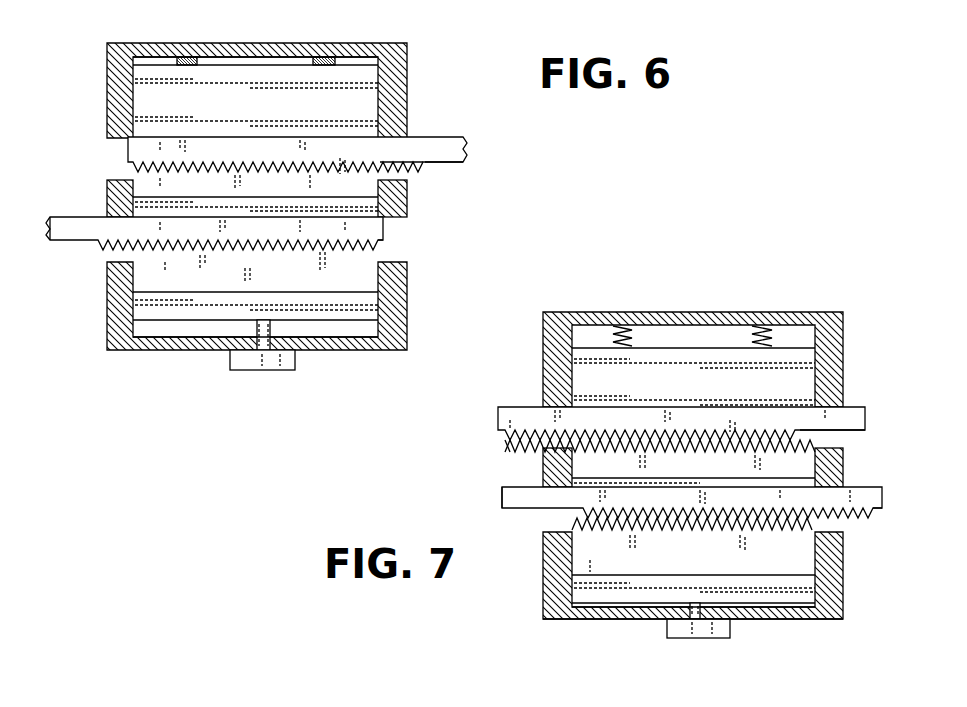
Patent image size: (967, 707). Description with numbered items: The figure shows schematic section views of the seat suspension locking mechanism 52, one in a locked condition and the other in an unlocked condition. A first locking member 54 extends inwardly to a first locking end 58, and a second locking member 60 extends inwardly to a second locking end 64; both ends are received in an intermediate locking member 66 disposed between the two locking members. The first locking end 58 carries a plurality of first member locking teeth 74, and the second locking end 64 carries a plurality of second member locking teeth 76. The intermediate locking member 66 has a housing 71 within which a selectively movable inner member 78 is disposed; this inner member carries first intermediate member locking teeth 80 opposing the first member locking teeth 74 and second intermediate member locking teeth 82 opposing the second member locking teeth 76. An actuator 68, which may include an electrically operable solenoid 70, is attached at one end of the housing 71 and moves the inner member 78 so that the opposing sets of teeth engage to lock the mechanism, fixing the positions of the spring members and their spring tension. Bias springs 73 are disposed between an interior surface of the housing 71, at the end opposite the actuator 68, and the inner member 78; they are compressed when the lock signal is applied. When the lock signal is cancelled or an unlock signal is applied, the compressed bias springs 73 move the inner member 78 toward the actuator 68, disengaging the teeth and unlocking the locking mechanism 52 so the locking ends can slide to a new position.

In FIG. 6, the locking mechanism 52 is at (104, 76).
In FIG. 7, the locking mechanism 52 is at (540, 353).
In FIG. 6, the first locking member 54 is at (62, 243).
In FIG. 7, the first locking member 54 is at (512, 511).
In FIG. 6, the first locking end 58 is at (356, 233).
In FIG. 7, the first locking end 58 is at (882, 500).
In FIG. 6, the second locking member 60 is at (451, 170).
In FIG. 7, the second locking member 60 is at (857, 406).
In FIG. 6, the second locking end 64 is at (127, 152).
In FIG. 7, the second locking end 64 is at (497, 420).
In FIG. 6, the intermediate locking member 66 is at (395, 353).
In FIG. 7, the intermediate locking member 66 is at (828, 621).
In FIG. 6, the actuator 68 is at (257, 372).
In FIG. 7, the actuator 68 is at (712, 641).
In FIG. 6, the electrically operable solenoid 70 is at (232, 358).
In FIG. 7, the electrically operable solenoid 70 is at (684, 636).
In FIG. 6, the housing 71 is at (185, 56).
In FIG. 7, the housing 71 is at (588, 621).
In FIG. 6, the bias springs 73 is at (318, 60).
In FIG. 7, the bias springs 73 is at (757, 340).
In FIG. 6, the first member locking teeth 74 is at (101, 244).
In FIG. 7, the first member locking teeth 74 is at (845, 513).
In FIG. 6, the second member locking teeth 76 is at (412, 170).
In FIG. 7, the second member locking teeth 76 is at (516, 440).
In FIG. 6, the selectively movable inner member 78 is at (347, 80).
In FIG. 7, the selectively movable inner member 78 is at (694, 382).
In FIG. 6, the first intermediate member locking teeth 80 is at (360, 276).
In FIG. 7, the first intermediate member locking teeth 80 is at (755, 528).
In FIG. 6, the second intermediate member locking teeth 82 is at (364, 164).
In FIG. 7, the second intermediate member locking teeth 82 is at (805, 440).